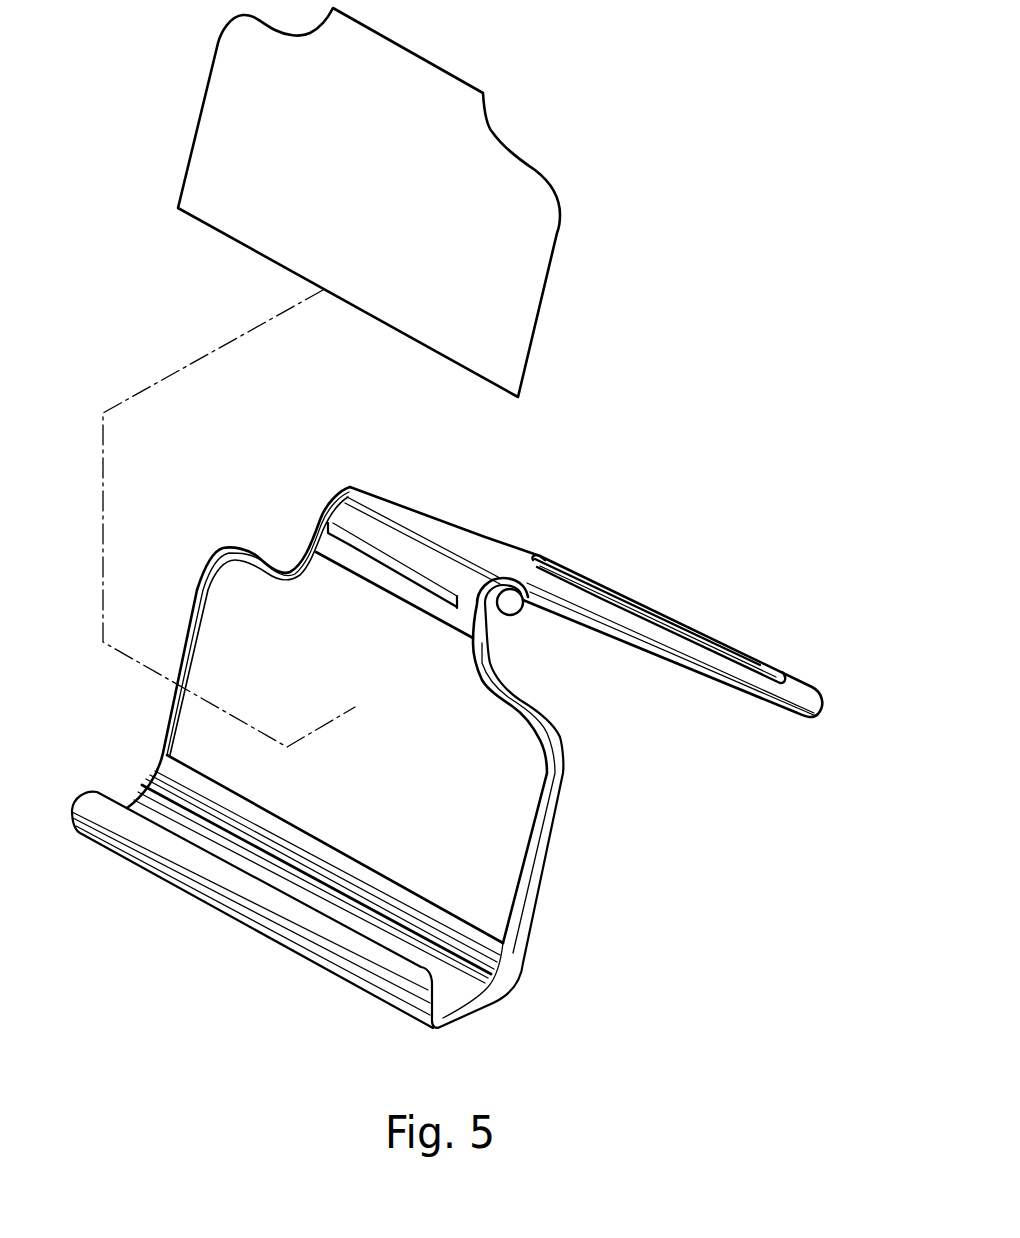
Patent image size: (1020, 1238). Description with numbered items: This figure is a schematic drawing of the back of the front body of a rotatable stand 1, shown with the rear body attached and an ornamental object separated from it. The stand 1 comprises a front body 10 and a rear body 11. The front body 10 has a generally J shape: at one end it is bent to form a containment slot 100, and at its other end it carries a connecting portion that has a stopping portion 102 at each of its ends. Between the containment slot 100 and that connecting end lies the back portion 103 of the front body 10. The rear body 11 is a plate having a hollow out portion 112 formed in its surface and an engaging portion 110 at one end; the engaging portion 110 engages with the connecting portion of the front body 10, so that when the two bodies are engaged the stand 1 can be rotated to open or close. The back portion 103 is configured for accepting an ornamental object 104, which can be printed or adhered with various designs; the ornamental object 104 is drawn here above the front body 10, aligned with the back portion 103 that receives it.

The stand 1 is at (445, 626).
The front body 10 is at (205, 542).
The containment slot 100 is at (448, 980).
The stopping portion 102 is at (522, 618).
The back portion 103 is at (194, 723).
The ornamental object 104 is at (465, 152).
The rear body 11 is at (586, 576).
The engaging portion 110 is at (371, 505).
The hollow out portion 112 is at (647, 605).